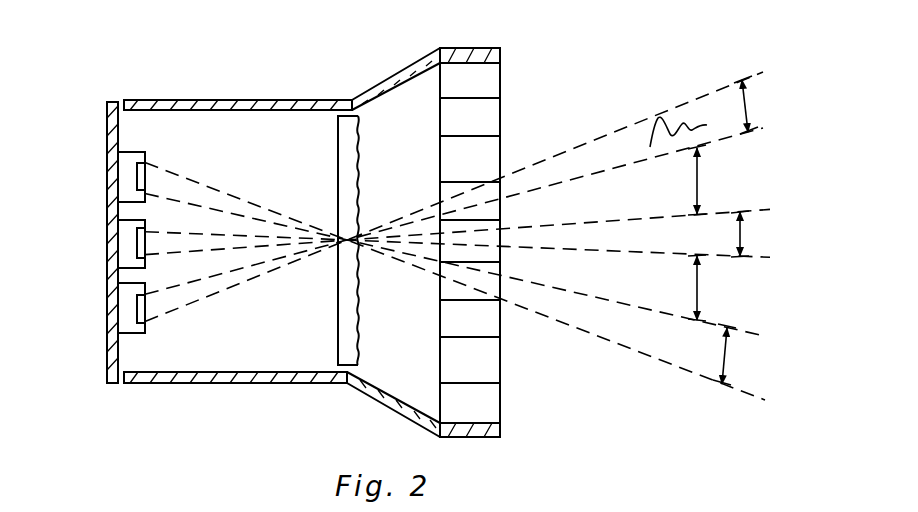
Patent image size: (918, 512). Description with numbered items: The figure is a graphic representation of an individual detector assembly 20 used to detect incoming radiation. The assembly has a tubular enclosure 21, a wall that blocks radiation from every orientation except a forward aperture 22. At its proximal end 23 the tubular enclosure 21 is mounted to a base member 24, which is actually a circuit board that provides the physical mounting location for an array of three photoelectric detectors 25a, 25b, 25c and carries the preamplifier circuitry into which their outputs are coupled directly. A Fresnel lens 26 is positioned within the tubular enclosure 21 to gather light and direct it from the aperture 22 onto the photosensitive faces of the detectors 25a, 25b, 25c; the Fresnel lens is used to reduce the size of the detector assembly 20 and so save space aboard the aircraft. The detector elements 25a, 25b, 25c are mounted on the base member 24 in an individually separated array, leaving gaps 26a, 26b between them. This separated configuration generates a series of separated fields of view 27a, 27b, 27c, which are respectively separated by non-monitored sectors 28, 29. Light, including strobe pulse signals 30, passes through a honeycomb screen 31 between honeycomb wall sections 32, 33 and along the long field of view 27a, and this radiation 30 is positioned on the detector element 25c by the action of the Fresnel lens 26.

The individual detector assembly 20 is at (200, 99).
The tubular enclosure 21 is at (332, 100).
The forward aperture 22 is at (393, 138).
The proximal end 23 is at (128, 100).
The base member 24 is at (107, 124).
The photoelectric detector 25a is at (128, 173).
The photoelectric detector 25b is at (128, 239).
The photoelectric detector 25c is at (128, 307).
The Fresnel lens 26 is at (344, 323).
The gap 26a is at (127, 210).
The gap 26b is at (127, 273).
The field of view 27a is at (748, 105).
The field of view 27b is at (743, 237).
The field of view 27c is at (728, 363).
The non-monitored sector 28 is at (700, 183).
The non-monitored sector 29 is at (700, 297).
The strobe pulse signals 30 is at (676, 112).
The honeycomb screen 31 is at (503, 122).
The honeycomb wall section 32 is at (500, 168).
The honeycomb wall section 33 is at (500, 214).